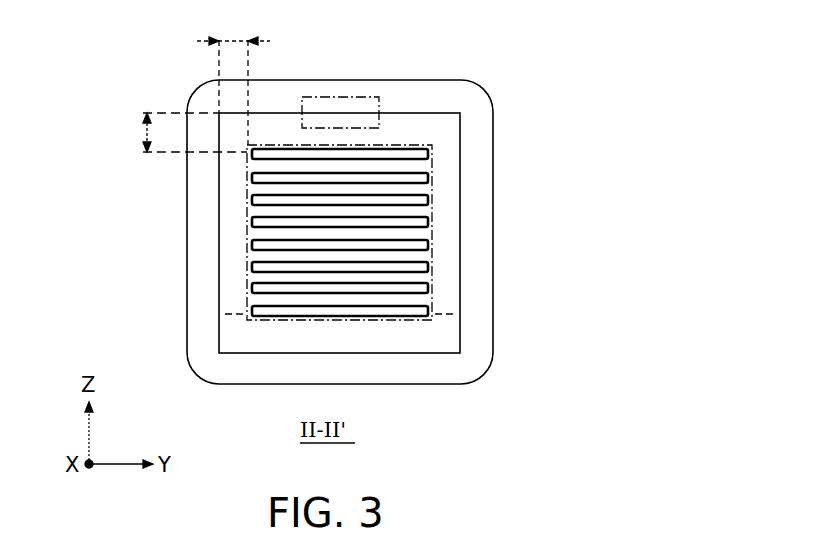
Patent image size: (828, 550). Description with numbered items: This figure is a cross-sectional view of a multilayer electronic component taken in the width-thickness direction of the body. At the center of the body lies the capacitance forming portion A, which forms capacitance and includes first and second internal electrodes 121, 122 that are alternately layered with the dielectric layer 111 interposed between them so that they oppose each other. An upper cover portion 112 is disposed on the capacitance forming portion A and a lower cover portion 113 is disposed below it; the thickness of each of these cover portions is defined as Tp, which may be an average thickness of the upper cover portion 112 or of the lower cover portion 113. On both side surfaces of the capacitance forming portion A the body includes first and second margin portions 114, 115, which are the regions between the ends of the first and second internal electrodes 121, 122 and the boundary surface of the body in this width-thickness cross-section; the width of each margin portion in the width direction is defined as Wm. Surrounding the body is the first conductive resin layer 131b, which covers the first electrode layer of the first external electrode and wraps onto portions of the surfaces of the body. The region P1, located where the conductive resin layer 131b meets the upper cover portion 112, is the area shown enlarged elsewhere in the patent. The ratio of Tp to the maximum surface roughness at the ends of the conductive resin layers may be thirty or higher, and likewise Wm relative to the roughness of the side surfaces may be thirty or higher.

The first conductive resin layer 131b is at (467, 102).
The upper cover portion 112 is at (440, 122).
The lower cover portion 113 is at (450, 337).
The first margin portion 114 is at (447, 238).
The second margin portion 115 is at (232, 237).
The first internal electrode 121 is at (413, 150).
The second internal electrode 122 is at (412, 178).
The dielectric layer 111 is at (413, 167).
The capacitance forming portion A is at (432, 263).
The region P1 is at (340, 97).
The width of margin portion Wm is at (233, 76).
The thickness of cover portion Tp is at (179, 132).